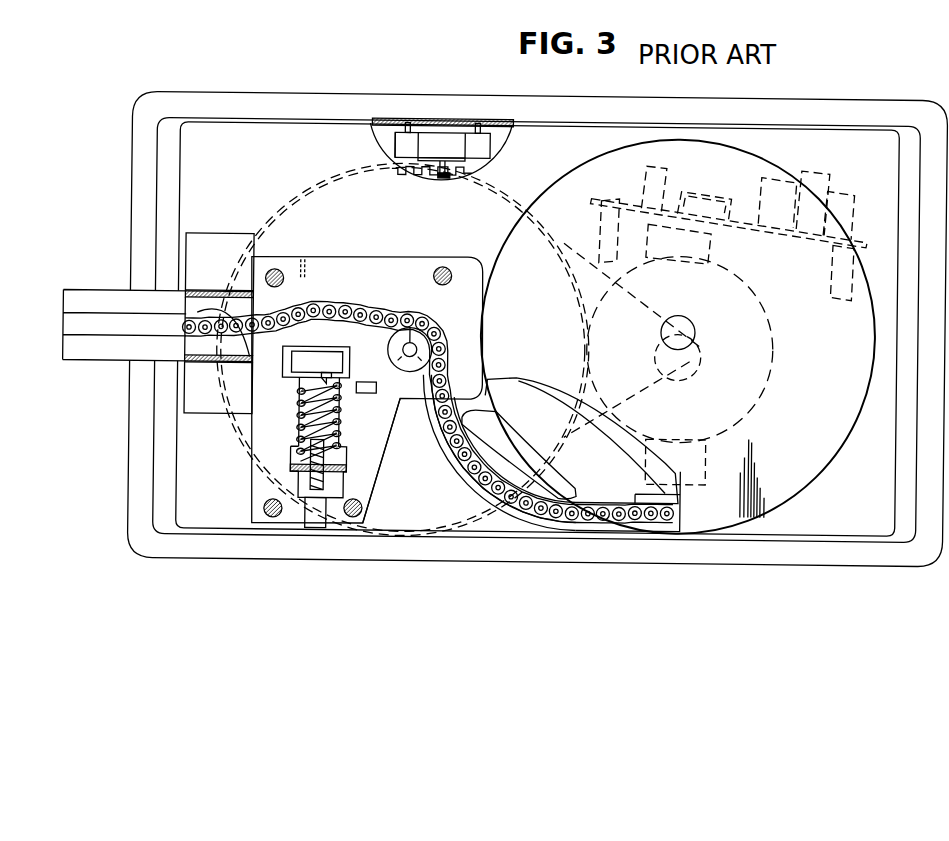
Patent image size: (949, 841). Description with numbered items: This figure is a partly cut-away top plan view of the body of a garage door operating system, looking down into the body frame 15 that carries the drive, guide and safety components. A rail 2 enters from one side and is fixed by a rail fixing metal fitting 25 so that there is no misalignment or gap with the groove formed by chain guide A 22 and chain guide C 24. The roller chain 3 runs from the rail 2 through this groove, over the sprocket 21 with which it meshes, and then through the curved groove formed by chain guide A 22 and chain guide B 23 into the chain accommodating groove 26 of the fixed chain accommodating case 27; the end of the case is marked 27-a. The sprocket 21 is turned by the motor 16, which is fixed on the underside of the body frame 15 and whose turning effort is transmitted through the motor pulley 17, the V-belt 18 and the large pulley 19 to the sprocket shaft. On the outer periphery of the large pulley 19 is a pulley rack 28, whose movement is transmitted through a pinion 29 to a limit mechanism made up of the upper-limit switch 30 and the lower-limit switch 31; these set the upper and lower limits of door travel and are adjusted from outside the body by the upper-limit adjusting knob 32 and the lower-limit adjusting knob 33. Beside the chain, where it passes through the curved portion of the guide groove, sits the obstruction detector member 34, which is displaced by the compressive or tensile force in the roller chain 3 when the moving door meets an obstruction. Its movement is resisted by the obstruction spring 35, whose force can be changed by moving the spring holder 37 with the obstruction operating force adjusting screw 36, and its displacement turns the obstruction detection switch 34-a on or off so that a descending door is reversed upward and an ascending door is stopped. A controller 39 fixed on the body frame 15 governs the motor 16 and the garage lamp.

The rail 2 is at (98, 294).
The roller chain 3 is at (572, 524).
The body frame 15 is at (128, 177).
The motor 16 is at (773, 328).
The motor pulley 17 is at (700, 367).
The V-belt 18 is at (652, 404).
The large pulley 19 is at (288, 214).
The sprocket 21 is at (400, 320).
The chain guide A 22 is at (350, 262).
The chain guide B 23 is at (383, 484).
The chain guide C 24 is at (246, 402).
The rail fixing metal fitting 25 is at (218, 238).
The chain accommodating groove 26 is at (470, 498).
The fixed chain accommodating case 27 is at (802, 481).
The disc bracket 27-a is at (650, 520).
The pulley rack 28 is at (390, 170).
The pinion 29 is at (462, 172).
The upper-limit switch 30 is at (393, 147).
The lower-limit switch 31 is at (488, 143).
The upper-limit adjusting knob 32 is at (405, 122).
The lower-limit adjusting knob 33 is at (477, 122).
The obstruction detector member 34 is at (300, 384).
The obstruction detection switch 34-a is at (367, 396).
The obstruction spring 35 is at (302, 440).
The obstruction operating force adjusting screw 36 is at (318, 531).
The spring holder 37 is at (310, 473).
The controller 39 is at (757, 162).